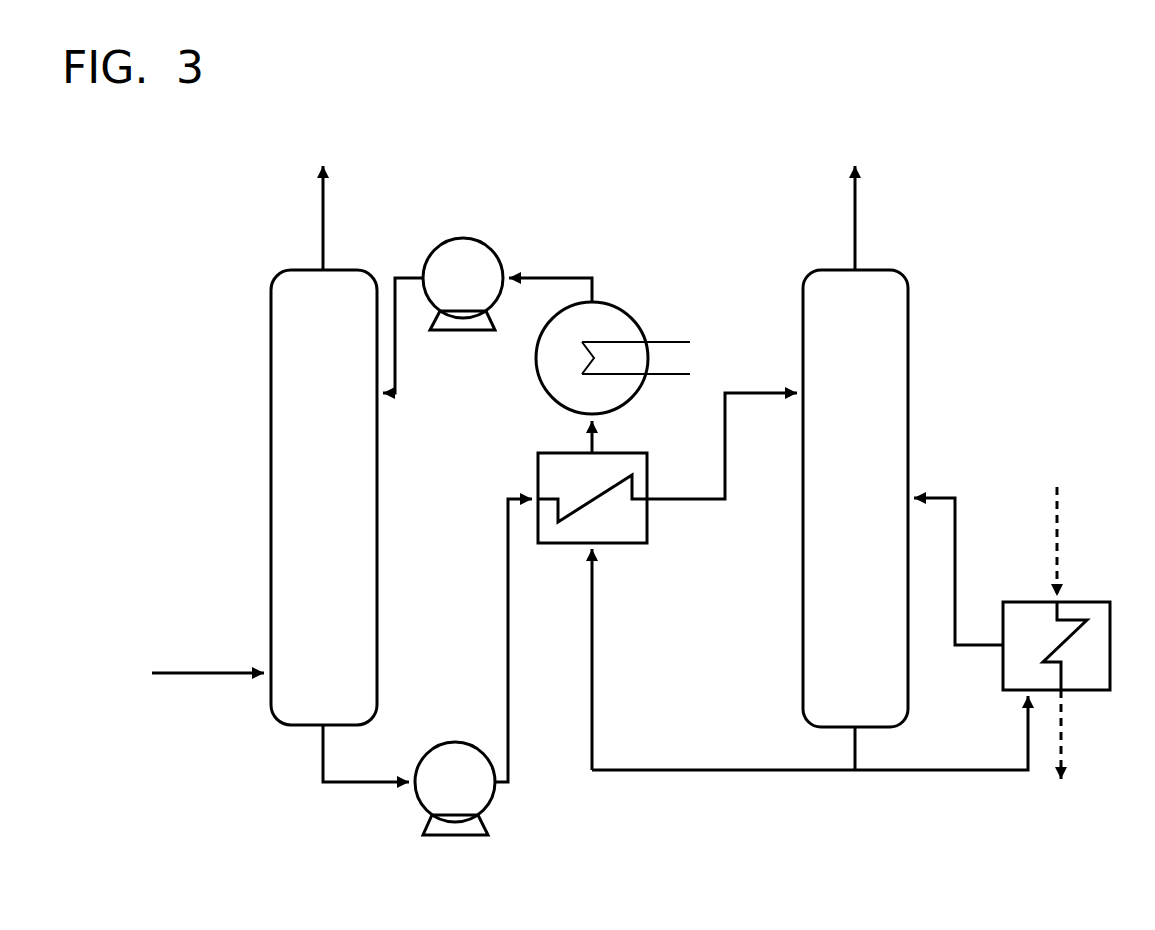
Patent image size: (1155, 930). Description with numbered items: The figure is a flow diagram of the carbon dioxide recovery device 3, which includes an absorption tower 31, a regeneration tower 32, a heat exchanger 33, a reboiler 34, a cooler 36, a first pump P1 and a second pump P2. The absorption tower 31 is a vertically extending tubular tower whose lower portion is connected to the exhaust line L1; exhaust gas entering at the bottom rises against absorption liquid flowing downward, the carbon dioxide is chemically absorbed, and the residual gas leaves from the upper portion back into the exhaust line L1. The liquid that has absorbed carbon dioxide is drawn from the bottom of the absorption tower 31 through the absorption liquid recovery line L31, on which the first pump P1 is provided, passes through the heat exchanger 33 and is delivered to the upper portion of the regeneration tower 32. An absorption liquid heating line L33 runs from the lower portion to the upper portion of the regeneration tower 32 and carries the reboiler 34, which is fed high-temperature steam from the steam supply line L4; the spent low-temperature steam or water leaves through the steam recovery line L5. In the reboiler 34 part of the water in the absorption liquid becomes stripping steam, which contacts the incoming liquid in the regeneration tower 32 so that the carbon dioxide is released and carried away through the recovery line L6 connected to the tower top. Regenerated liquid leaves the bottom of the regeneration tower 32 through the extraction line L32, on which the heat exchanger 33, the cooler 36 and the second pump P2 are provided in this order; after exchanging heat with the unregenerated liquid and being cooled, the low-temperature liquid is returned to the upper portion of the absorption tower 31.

The carbon dioxide recovery device 3 is at (196, 186).
The absorption tower 31 is at (283, 358).
The regeneration tower 32 is at (908, 340).
The heat exchanger 33 is at (647, 543).
The reboiler 34 is at (1090, 602).
The cooler 36 is at (610, 302).
The first pump P1 is at (456, 835).
The second pump P2 is at (485, 240).
The exhaust line L1 is at (323, 218).
The steam supply line L4 is at (1057, 537).
The steam recovery line L5 is at (1062, 743).
The recovery line L6 is at (855, 217).
The absorption liquid recovery line L31 is at (508, 600).
The extraction line L32 is at (592, 678).
The absorption liquid heating line L33 is at (943, 770).